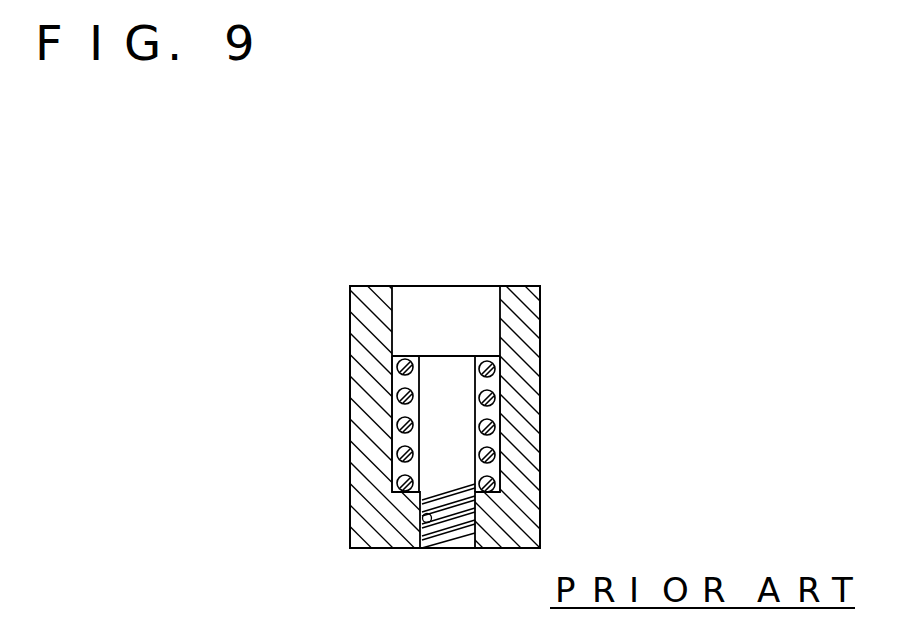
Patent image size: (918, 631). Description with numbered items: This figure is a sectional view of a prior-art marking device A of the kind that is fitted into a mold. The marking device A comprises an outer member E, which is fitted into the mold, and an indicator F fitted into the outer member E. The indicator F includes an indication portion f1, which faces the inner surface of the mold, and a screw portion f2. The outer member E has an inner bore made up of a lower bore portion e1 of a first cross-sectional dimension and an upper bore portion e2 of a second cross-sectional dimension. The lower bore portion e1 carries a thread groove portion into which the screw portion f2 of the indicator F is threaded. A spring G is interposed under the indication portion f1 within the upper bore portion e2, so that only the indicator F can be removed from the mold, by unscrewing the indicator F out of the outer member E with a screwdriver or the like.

The marking device A is at (583, 318).
The outer member E is at (355, 402).
The lower bore portion e1 is at (422, 518).
The upper bore portion e2 is at (398, 469).
The indicator F is at (530, 415).
The indication portion f1 is at (477, 338).
The screw portion f2 is at (467, 458).
The spring G is at (506, 482).